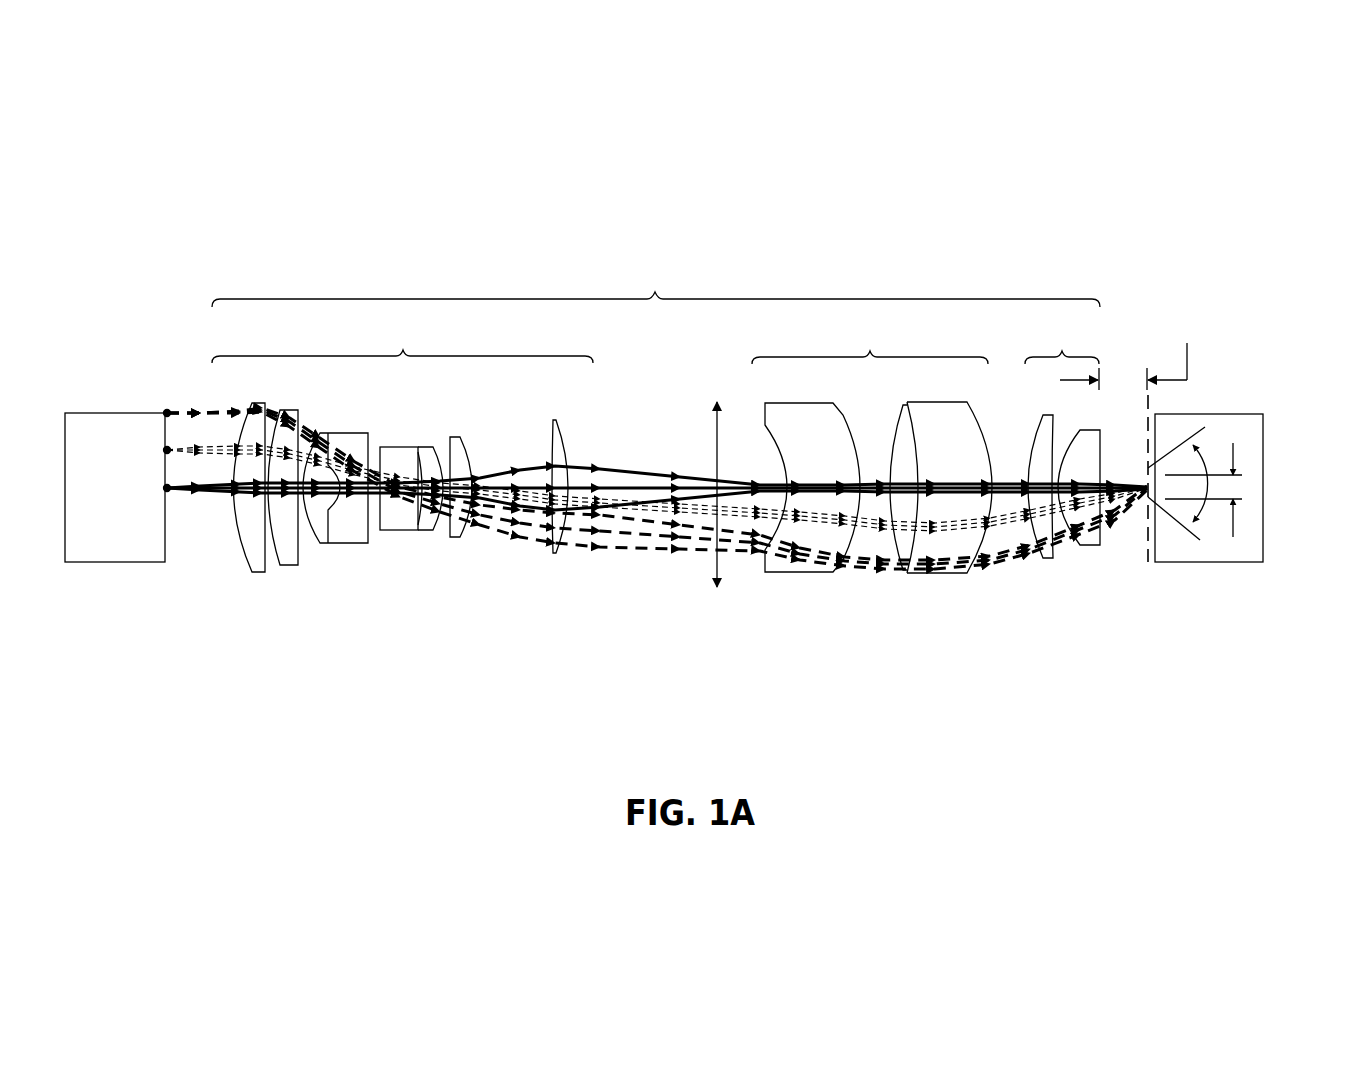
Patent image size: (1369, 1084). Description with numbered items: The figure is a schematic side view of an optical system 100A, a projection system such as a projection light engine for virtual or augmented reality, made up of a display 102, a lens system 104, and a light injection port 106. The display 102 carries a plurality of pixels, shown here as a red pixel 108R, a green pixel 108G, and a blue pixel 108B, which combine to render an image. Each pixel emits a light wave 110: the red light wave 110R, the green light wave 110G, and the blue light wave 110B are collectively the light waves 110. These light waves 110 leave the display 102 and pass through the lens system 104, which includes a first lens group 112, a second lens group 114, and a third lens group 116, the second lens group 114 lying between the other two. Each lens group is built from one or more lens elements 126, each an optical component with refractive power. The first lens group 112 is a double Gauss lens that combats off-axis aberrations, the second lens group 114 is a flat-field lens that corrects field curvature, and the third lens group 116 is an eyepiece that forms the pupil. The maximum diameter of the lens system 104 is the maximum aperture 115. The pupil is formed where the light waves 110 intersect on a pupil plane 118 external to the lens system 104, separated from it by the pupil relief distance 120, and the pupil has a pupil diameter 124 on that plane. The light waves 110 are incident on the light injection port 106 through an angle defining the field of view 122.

The optical system 100A is at (1221, 218).
The display 102 is at (134, 497).
The lens system 104 is at (661, 464).
The light injection port 106 is at (1207, 562).
The green pixel 108G is at (165, 449).
The red pixel 108R is at (166, 413).
The blue pixel 108B is at (167, 491).
The light waves 110 is at (615, 465).
The green light wave 110G is at (193, 412).
The red light wave 110R is at (233, 402).
The blue light wave 110B is at (223, 497).
The first lens group 112 is at (402, 340).
The second lens group 114 is at (870, 341).
The maximum aperture 115 is at (713, 432).
The third lens group 116 is at (1062, 354).
The pupil plane 118 is at (1145, 425).
The pupil relief distance 120 is at (1177, 353).
The field of view 122 is at (1205, 468).
The pupil diameter 124 is at (1233, 537).
The lens element 126 is at (257, 572).